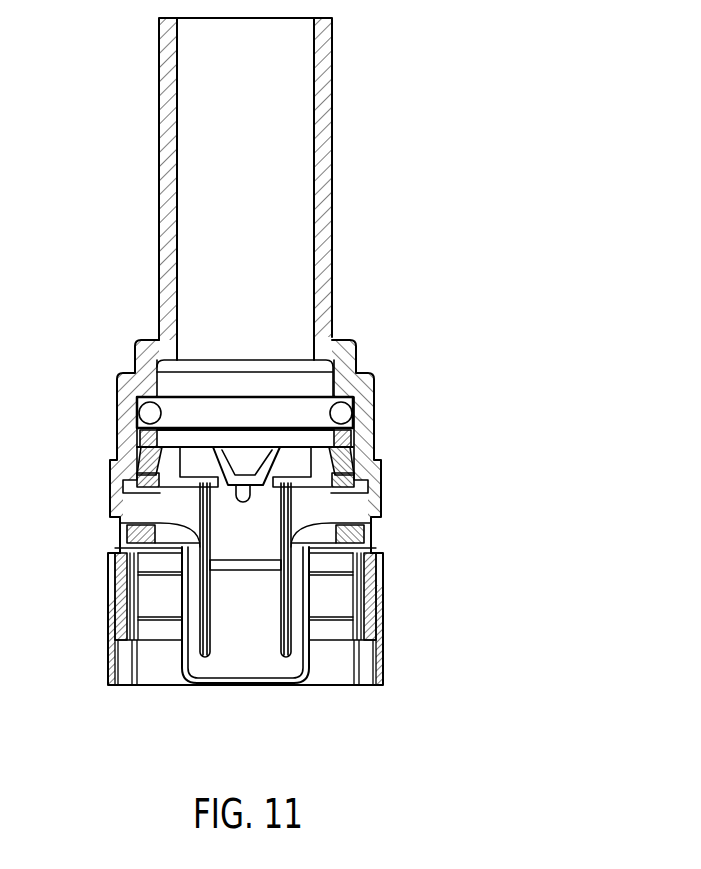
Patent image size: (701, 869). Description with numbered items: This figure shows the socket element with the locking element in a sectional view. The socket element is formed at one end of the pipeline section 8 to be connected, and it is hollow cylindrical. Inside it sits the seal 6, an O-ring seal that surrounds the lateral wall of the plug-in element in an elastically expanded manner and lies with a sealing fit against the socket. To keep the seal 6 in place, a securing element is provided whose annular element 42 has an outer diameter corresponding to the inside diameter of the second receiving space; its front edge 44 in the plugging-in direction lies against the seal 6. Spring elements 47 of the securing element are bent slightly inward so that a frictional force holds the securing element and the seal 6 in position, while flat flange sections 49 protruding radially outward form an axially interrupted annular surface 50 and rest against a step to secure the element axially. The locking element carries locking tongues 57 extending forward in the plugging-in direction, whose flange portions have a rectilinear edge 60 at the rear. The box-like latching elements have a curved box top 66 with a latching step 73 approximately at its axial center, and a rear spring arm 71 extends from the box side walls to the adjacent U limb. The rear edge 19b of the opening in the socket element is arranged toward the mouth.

The pipeline section 8 is at (332, 135).
The seal 6 is at (357, 410).
The annular element 42 is at (345, 438).
The front edge 44 is at (138, 440).
The spring elements 47 is at (225, 468).
The flange sections 49 is at (138, 478).
The annular surface 50 is at (248, 487).
The locking tongues 57 is at (243, 632).
The rectilinear edge 60 is at (165, 523).
The box top 66 is at (115, 577).
The rear spring arm 71 is at (160, 632).
The latching step 73 is at (373, 578).
The rear edge 19b is at (117, 607).